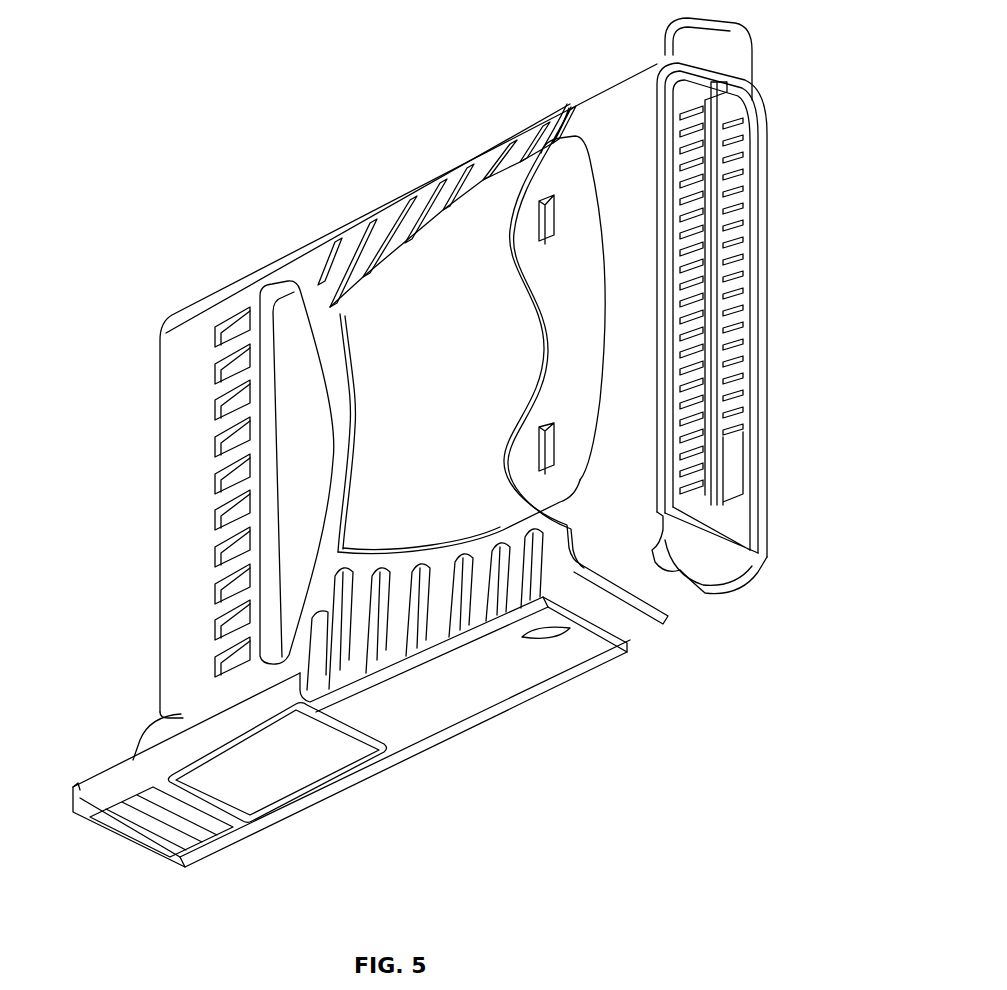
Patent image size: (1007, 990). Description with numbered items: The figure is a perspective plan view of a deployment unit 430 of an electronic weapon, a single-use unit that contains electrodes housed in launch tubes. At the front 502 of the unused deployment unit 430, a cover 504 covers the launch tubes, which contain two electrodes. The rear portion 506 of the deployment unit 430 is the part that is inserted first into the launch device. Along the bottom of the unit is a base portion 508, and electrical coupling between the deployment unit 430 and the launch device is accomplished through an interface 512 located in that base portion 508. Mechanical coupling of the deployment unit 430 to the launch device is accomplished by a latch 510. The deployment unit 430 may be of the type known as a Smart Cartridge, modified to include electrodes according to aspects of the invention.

The deployment unit 430 is at (102, 142).
The front 502 is at (770, 174).
The cover 504 is at (740, 302).
The rear portion 506 is at (160, 455).
The base portion 508 is at (283, 813).
The latch 510 is at (628, 646).
The interface 512 is at (128, 872).